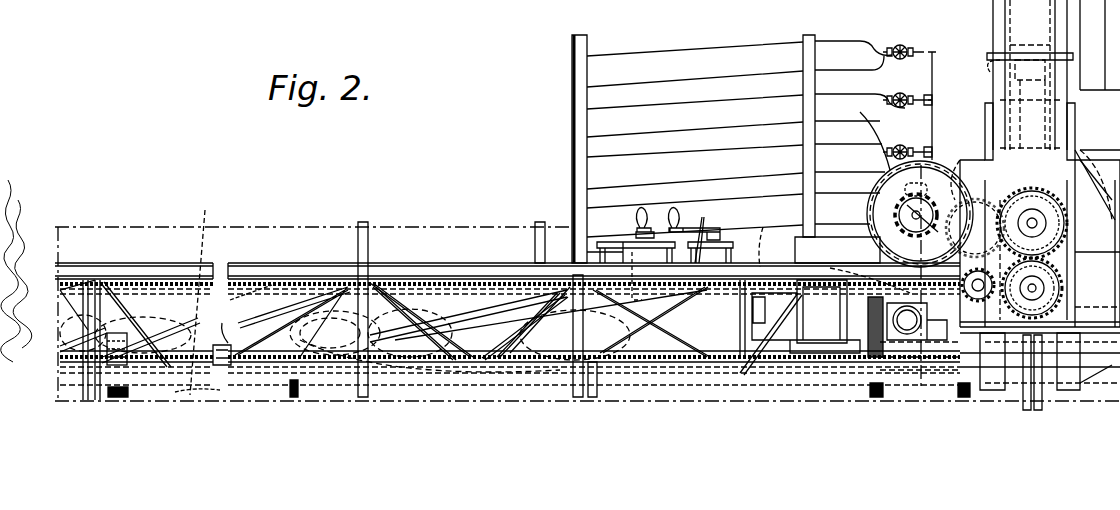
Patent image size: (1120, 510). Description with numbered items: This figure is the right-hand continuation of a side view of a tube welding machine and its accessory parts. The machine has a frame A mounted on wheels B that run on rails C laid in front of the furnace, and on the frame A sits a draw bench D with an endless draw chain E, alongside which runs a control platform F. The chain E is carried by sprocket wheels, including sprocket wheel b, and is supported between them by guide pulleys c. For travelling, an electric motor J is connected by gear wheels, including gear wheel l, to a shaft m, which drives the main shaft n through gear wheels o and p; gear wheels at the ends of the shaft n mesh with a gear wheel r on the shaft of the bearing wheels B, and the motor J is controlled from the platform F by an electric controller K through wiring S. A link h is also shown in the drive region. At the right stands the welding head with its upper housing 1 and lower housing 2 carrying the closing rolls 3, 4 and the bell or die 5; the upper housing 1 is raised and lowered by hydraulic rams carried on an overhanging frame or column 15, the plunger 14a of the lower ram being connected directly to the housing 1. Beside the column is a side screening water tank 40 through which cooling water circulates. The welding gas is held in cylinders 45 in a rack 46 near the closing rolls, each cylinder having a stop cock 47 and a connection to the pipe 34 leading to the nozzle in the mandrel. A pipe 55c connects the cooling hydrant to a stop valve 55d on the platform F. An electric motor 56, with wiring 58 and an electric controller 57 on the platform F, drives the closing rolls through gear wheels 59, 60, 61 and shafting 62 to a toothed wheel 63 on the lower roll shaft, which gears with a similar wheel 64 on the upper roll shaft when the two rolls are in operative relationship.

The frame A is at (312, 288).
The wheels B is at (148, 8).
The rails C is at (1032, 408).
The draw bench D is at (450, 262).
The endless draw chain E is at (165, 262).
The platform F is at (1099, 373).
The electric motor J is at (806, 279).
The electric controller K is at (723, 250).
The wiring S is at (708, 234).
The sprocket wheel b is at (840, 265).
The guide pulleys c is at (120, 320).
The link h is at (802, 330).
The gear wheel l is at (870, 340).
The shaft m is at (372, 340).
The main shaft n is at (220, 342).
The gear wheel o is at (209, 392).
The gear wheel p is at (128, 390).
The gear wheel r is at (960, 382).
The upper housing 1 is at (1040, 243).
The housing 2 is at (1024, 250).
The upper closing roll 3 is at (1092, 172).
The lower closing roll 4 is at (1040, 315).
The bell or die 5 is at (1094, 206).
The plunger 14a is at (995, 68).
The overhanging frame or column 15 is at (1030, 80).
The pipe 34 is at (934, 118).
The water tank 40 is at (1097, 110).
The bottles or cylinders 45 is at (742, 66).
The rack 46 is at (590, 110).
The stop cocks 47 is at (882, 48).
The pipe 55c is at (262, 282).
The stop valve 55d is at (635, 256).
The electric motor 56 is at (888, 168).
The electric controller 57 is at (604, 252).
The wiring 58 is at (580, 326).
The gear wheel 59 is at (907, 215).
The gear wheel 60 is at (912, 212).
The gear wheel 61 is at (960, 160).
The shafting 62 is at (917, 267).
The toothed wheel 63 is at (1055, 287).
The toothed wheel 64 is at (1028, 205).